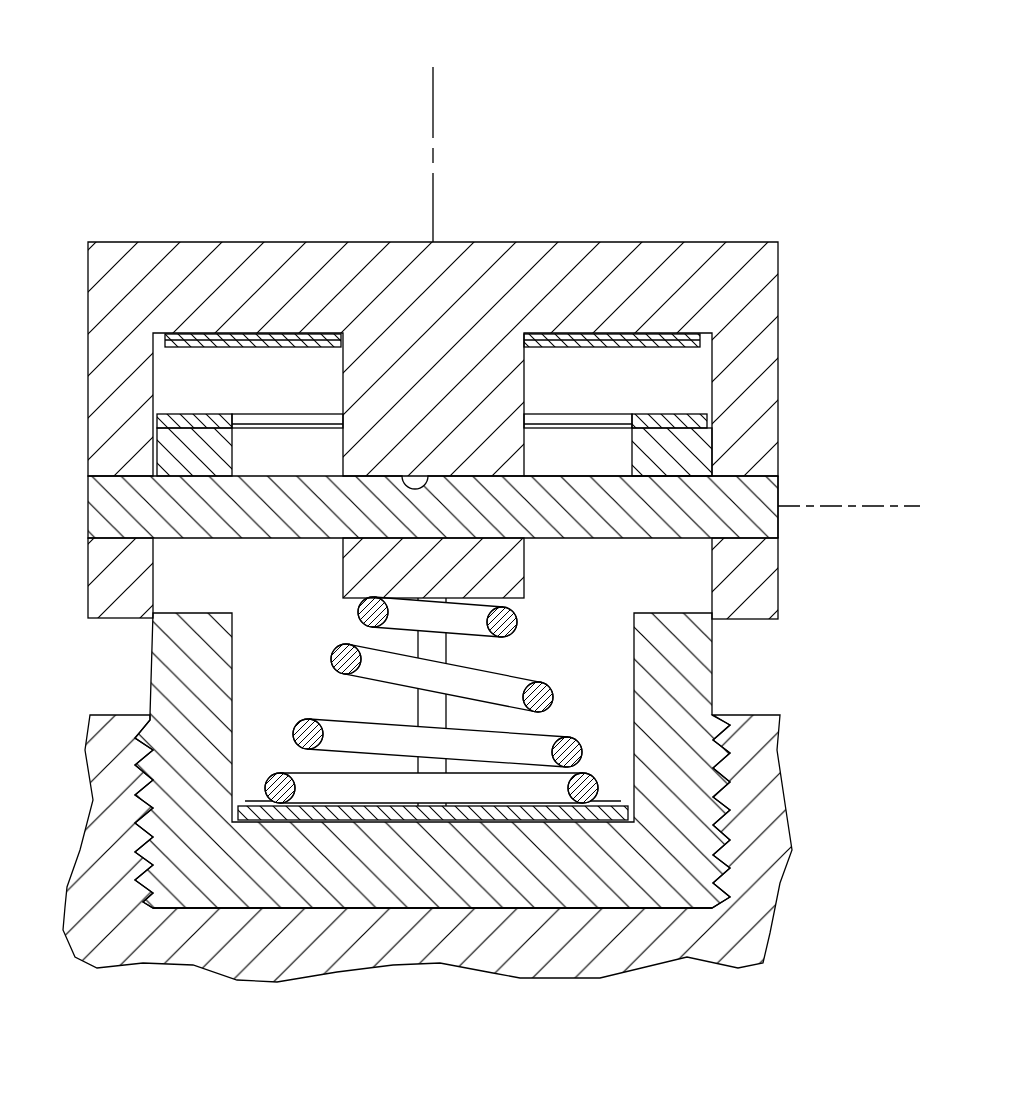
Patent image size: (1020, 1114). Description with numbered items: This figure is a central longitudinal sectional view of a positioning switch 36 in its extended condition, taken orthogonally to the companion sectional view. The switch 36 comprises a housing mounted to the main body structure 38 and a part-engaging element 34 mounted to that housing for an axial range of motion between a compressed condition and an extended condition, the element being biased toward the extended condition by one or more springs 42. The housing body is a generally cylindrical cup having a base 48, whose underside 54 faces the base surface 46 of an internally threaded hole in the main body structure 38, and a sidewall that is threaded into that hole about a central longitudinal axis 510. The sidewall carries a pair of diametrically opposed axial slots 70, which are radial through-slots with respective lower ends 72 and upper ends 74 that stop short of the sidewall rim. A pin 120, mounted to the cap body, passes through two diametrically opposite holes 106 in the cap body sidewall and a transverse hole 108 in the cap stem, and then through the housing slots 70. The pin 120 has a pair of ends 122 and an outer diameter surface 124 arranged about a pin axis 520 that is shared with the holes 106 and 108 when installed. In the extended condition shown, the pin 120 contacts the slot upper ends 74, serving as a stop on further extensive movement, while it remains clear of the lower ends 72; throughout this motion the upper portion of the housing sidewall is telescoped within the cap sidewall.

The part-engaging element 34 is at (777, 215).
The switch 36 is at (203, 188).
The main body structure 38 is at (198, 940).
The spring 42 is at (494, 690).
The base surface 46 is at (230, 904).
The base 48 is at (382, 887).
The underside 54 is at (650, 908).
The axial slots 70 is at (183, 575).
The lower ends 72 is at (657, 613).
The upper ends 74 is at (678, 480).
The holes 106 is at (118, 483).
The transverse hole 108 is at (432, 485).
The pin 120 is at (470, 493).
The ends 122 is at (778, 496).
The outer diameter surface 124 is at (652, 477).
The central longitudinal axis 510 is at (433, 89).
The pin axis 520 is at (906, 509).